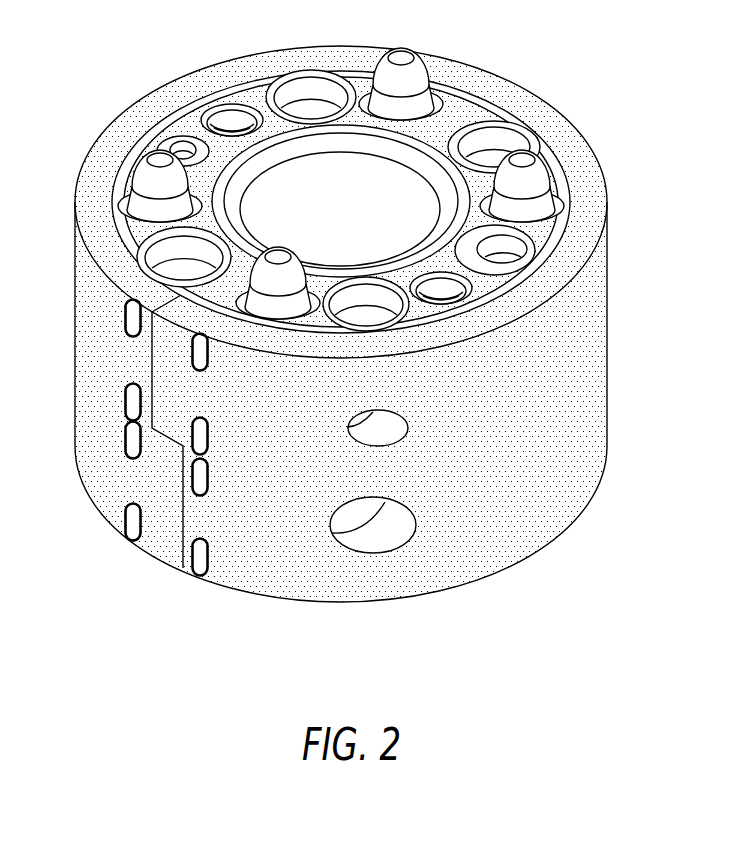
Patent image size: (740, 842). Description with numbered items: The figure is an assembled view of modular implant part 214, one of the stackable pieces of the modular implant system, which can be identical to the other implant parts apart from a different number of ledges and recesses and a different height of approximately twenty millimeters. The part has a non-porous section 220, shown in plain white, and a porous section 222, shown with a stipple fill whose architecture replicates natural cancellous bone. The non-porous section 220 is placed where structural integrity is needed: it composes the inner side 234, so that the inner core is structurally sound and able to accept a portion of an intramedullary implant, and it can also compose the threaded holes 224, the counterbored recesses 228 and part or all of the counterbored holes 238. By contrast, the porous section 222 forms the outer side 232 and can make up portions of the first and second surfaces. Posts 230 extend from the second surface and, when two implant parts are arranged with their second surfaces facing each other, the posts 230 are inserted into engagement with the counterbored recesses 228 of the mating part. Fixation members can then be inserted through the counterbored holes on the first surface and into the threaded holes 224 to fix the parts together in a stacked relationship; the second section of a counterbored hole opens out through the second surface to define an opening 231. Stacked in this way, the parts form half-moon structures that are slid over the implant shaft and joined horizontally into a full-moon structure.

The modular implant part 214 is at (110, 485).
The non-porous section 220 is at (123, 177).
The porous section 222 is at (466, 73).
The threaded hole 224 is at (230, 117).
The counterbored recess 228 is at (313, 88).
The post 230 is at (403, 58).
The opening 231 is at (181, 150).
The outer side 232 is at (610, 326).
The inner side 234 is at (385, 183).
The counterbored hole 238 is at (385, 535).